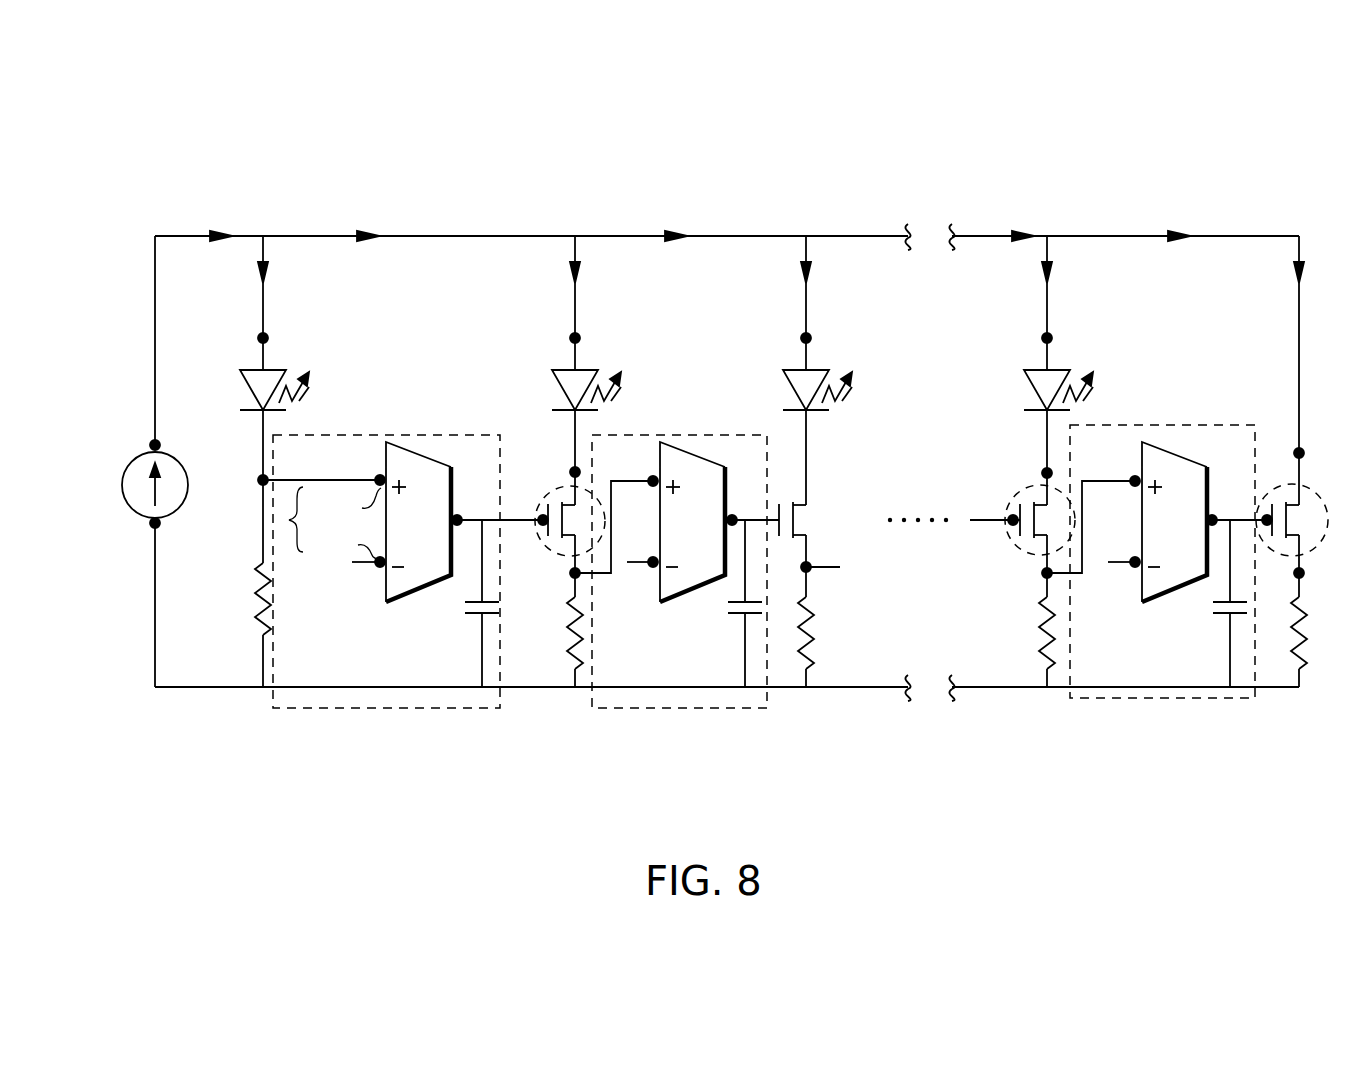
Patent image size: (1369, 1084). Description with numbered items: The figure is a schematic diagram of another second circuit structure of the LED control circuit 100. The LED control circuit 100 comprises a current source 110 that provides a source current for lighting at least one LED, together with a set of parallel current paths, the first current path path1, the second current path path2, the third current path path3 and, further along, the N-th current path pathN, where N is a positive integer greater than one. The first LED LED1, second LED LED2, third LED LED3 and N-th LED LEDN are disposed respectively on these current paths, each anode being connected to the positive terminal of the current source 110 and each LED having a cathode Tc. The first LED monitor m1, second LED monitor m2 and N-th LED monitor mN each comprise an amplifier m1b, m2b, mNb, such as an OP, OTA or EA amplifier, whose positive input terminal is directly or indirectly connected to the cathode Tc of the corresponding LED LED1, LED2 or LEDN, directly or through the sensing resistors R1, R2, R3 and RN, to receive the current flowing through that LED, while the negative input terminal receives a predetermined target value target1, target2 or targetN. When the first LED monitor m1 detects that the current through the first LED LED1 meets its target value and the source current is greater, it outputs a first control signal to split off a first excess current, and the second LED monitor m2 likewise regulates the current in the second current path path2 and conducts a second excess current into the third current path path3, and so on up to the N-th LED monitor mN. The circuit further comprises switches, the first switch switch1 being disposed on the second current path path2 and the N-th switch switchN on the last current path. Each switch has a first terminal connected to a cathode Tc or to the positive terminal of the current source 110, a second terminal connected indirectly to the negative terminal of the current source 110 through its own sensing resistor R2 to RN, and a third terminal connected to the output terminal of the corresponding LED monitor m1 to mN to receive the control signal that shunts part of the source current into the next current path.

The LED control circuit 100 is at (452, 202).
The current source 110 is at (122, 488).
The first current path path1 is at (265, 428).
The second current path path2 is at (575, 428).
The third current path path3 is at (808, 428).
The N-th current path pathN is at (1047, 425).
The first LED LED1 is at (243, 390).
The second LED LED2 is at (551, 390).
The third LED LED3 is at (782, 390).
The N-th LED LEDN is at (1020, 390).
The first sensing resistor R1 is at (244, 599).
The second sensing resistor R2 is at (560, 633).
The third sensing resistor R3 is at (825, 633).
The N-th sensing resistor RN is at (1022, 633).
The first LED monitor m1 is at (405, 606).
The second LED monitor m2 is at (677, 606).
The N-th LED monitor mN is at (1159, 595).
The amplifier m1b is at (415, 595).
The amplifier m2b is at (688, 595).
The amplifier mNb is at (1153, 595).
The first switch switch1 is at (547, 498).
The N-th switch switchN is at (1270, 498).
The first target value target1 is at (347, 574).
The second target value target2 is at (641, 574).
The N-th target value targetN is at (1109, 574).
The cathode Tc is at (246, 482).